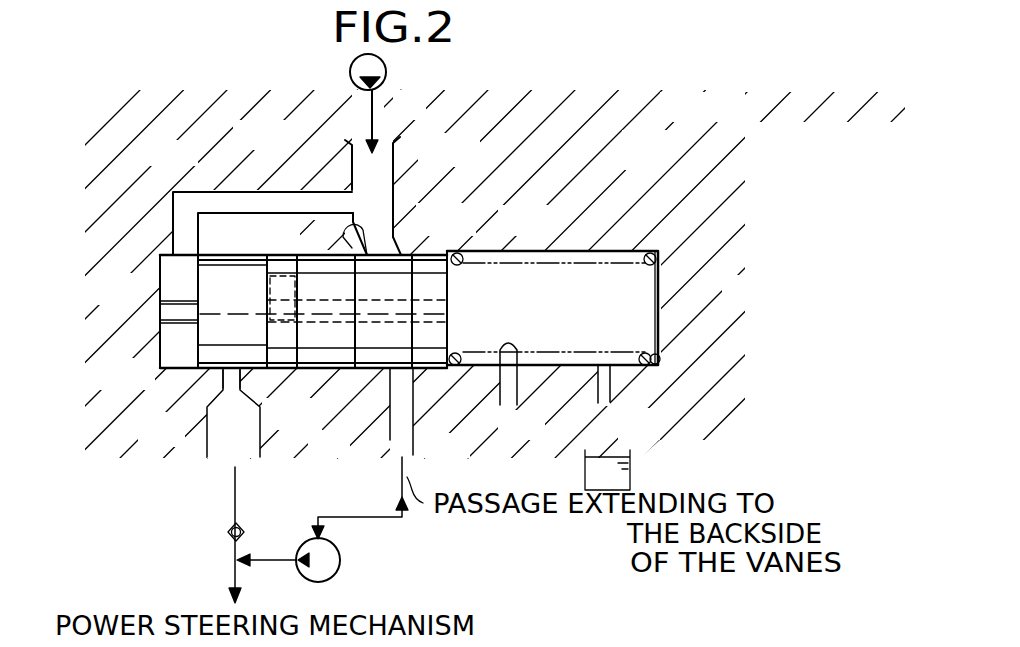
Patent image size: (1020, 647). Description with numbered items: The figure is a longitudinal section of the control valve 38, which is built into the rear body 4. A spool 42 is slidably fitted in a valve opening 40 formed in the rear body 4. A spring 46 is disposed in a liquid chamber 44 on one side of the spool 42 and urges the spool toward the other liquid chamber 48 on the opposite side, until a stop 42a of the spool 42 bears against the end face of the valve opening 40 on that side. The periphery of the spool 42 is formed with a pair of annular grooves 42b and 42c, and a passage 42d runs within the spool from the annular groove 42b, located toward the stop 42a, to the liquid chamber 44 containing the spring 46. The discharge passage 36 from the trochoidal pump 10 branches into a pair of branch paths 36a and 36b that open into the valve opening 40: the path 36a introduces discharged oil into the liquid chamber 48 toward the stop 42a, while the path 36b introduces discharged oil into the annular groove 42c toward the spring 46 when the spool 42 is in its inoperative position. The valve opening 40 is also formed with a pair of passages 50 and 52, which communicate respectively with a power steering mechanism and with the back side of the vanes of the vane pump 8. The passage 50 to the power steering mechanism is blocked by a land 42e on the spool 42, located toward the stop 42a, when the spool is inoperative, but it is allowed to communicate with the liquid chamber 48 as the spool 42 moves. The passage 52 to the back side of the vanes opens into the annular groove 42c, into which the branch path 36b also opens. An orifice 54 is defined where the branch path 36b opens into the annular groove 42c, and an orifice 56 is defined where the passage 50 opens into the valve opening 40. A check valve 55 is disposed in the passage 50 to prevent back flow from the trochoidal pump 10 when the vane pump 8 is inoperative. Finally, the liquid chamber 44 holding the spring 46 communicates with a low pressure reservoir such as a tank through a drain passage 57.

The rear body 4 is at (683, 298).
The vane pump 8 is at (341, 561).
The trochoidal pump 10 is at (386, 70).
The discharge passage 36 is at (393, 140).
The branch path 36a is at (262, 196).
The branch path 36b is at (392, 200).
The control valve 38 is at (582, 243).
The valve opening 40 is at (517, 375).
The spool 42 is at (340, 372).
The stop 42a is at (161, 360).
The annular groove 42b is at (283, 370).
The annular groove 42c is at (357, 370).
The passage 42d is at (405, 322).
The land 42e is at (223, 254).
The liquid chamber 44 is at (573, 327).
The spring 46 is at (456, 256).
The liquid chamber 48 is at (160, 281).
The passage 50 is at (207, 432).
The passage 52 is at (410, 408).
The orifice 54 is at (346, 237).
The check valve 55 is at (228, 533).
The orifice 56 is at (210, 390).
The drain passage 57 is at (610, 393).